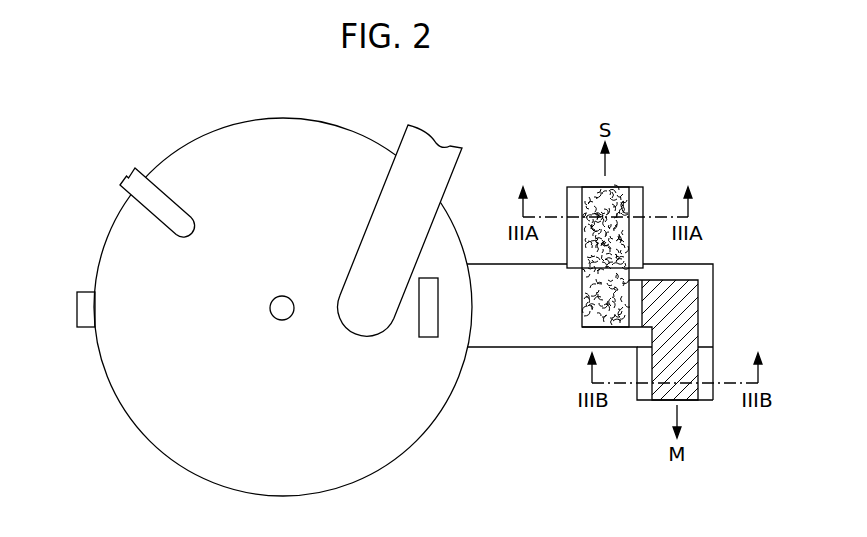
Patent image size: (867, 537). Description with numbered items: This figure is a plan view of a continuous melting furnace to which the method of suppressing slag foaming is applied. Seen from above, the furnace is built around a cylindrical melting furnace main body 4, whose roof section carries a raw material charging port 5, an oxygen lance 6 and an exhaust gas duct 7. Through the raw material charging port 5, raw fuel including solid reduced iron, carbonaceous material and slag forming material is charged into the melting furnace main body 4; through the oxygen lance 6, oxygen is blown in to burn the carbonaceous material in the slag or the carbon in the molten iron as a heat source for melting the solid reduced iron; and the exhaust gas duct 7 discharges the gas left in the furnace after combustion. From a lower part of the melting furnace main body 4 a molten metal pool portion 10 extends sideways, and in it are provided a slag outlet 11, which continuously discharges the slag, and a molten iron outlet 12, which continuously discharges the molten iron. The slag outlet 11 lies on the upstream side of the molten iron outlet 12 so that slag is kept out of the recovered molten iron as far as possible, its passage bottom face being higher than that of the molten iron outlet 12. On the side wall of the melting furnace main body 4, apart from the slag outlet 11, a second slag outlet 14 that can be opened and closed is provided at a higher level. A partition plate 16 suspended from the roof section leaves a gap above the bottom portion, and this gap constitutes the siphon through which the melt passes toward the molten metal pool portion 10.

The melting furnace main body 4 is at (215, 131).
The raw material charging port 5 is at (169, 198).
The oxygen lance 6 is at (273, 296).
The exhaust gas duct 7 is at (376, 198).
The molten metal pool portion 10 is at (510, 349).
The slag outlet 11 is at (567, 197).
The molten iron outlet 12 is at (713, 391).
The second slag outlet 14 is at (83, 292).
The partition plate 16 is at (419, 320).